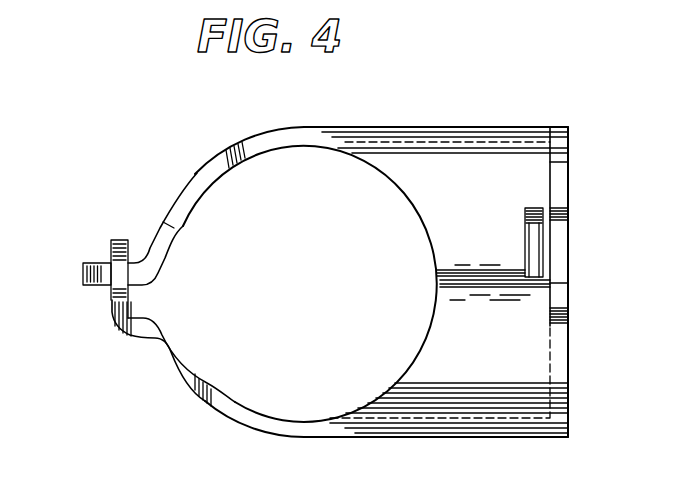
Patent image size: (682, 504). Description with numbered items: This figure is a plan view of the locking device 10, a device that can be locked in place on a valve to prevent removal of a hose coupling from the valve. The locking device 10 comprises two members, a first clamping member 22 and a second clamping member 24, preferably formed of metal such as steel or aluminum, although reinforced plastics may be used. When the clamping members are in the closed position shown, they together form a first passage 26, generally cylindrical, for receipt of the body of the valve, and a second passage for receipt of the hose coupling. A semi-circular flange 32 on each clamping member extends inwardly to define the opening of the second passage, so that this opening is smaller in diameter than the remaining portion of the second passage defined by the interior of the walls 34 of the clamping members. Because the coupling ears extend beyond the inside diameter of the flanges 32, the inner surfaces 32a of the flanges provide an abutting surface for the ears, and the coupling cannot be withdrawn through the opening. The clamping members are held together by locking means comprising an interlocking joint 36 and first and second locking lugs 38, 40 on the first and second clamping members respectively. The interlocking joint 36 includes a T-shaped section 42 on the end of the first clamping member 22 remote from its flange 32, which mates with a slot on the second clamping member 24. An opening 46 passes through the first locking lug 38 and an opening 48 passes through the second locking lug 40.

The locking device 10 is at (377, 123).
The first clamping member 22 is at (449, 437).
The second clamping member 24 is at (408, 126).
The first passage 26 is at (280, 397).
The semi-circular flange 32 is at (568, 138).
The inner surface of flange 32a is at (547, 155).
The wall 34 is at (478, 126).
The interlocking joint 36 is at (98, 263).
The first locking lug 38 is at (568, 313).
The second locking lug 40 is at (533, 206).
The T-shaped section 42 is at (121, 240).
The opening 46 is at (570, 254).
The opening 48 is at (523, 237).